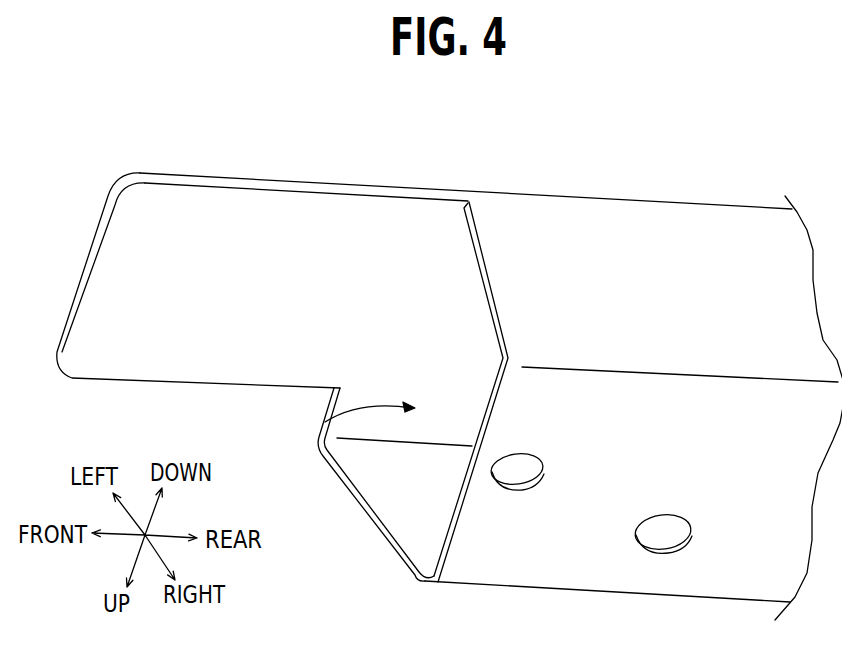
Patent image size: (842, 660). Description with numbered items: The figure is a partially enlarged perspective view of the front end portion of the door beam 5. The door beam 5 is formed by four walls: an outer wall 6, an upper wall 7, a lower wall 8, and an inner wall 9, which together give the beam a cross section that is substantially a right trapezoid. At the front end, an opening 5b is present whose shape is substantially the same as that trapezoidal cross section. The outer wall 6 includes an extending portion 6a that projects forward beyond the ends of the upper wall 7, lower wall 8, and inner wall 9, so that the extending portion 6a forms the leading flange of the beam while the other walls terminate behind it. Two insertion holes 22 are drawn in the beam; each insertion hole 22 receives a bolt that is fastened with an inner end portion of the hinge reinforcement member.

The door beam 5 is at (545, 166).
The opening 5b is at (325, 423).
The outer wall 6 is at (433, 295).
The extending portion 6a is at (226, 262).
The upper wall 7 is at (408, 510).
The lower wall 8 is at (660, 265).
The inner wall 9 is at (721, 558).
The insertion hole 22 is at (520, 484).